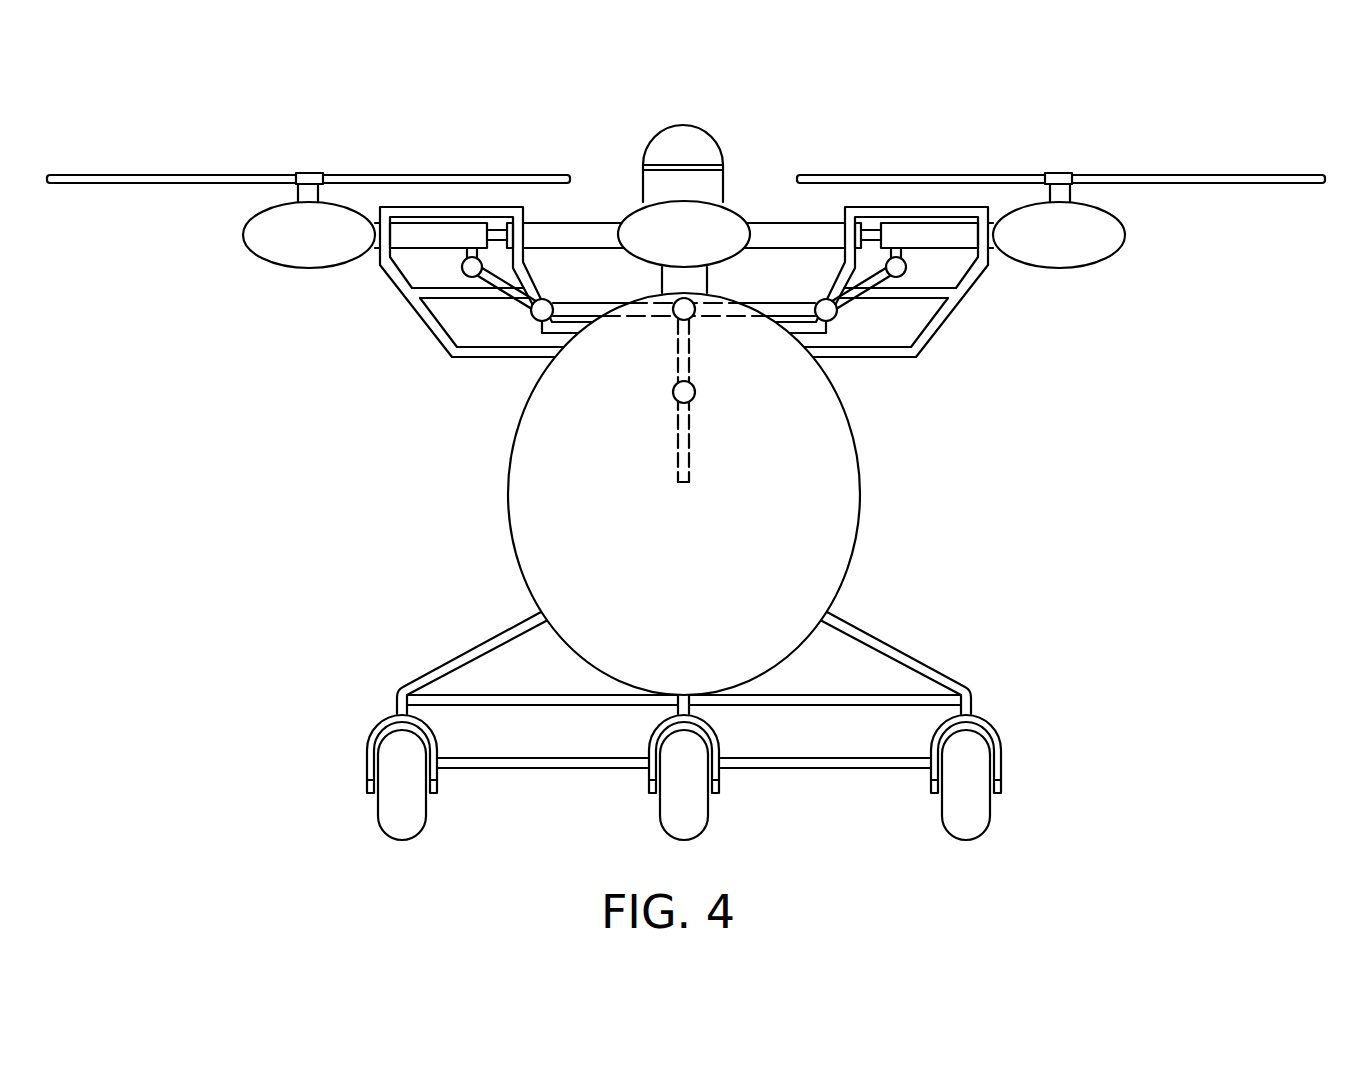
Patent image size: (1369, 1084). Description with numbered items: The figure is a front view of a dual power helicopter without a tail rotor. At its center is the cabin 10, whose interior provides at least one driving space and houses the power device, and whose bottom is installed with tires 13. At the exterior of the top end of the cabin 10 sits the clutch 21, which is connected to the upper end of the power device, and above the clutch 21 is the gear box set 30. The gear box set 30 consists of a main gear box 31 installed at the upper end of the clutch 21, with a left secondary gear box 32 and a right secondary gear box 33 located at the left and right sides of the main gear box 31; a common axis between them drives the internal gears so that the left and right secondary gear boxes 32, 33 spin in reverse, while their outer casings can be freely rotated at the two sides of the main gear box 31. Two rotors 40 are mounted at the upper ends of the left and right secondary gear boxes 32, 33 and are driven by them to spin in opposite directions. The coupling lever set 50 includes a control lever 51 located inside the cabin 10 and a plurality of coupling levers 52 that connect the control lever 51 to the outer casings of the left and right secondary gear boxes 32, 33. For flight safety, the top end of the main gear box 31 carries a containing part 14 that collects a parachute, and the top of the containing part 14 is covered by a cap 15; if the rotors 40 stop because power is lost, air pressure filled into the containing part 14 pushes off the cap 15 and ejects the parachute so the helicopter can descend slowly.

The cabin 10 is at (527, 527).
The tires 13 is at (390, 803).
The containing part 14 is at (648, 192).
The cap 15 is at (683, 142).
The clutch 21 is at (697, 281).
The gear box set 30 is at (294, 278).
The main gear box 31 is at (710, 227).
The left secondary gear box 32 is at (1070, 257).
The right secondary gear box 33 is at (275, 252).
The rotors 40 is at (332, 179).
The coupling lever set 50 is at (734, 371).
The control lever 51 is at (682, 443).
The coupling levers 52 is at (858, 292).